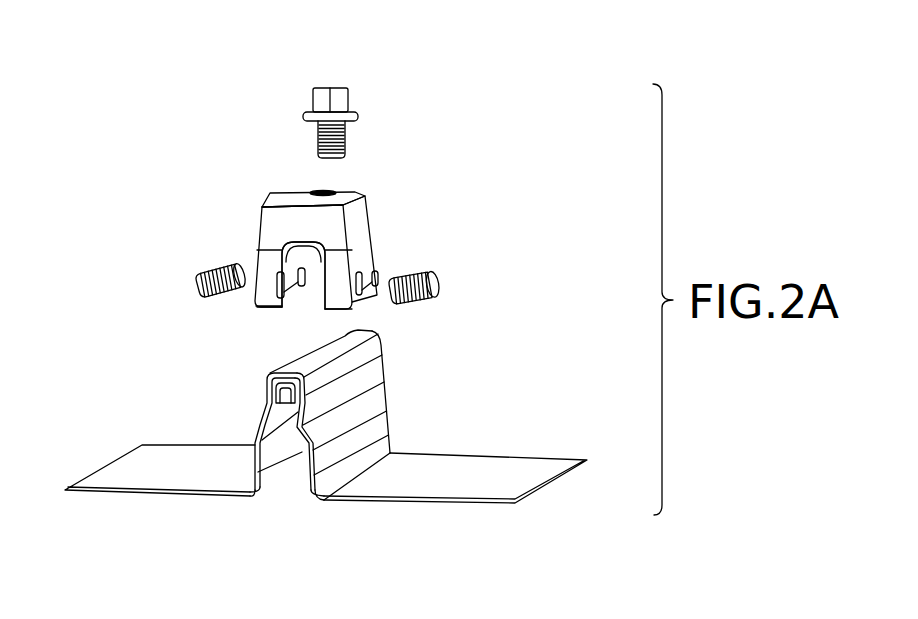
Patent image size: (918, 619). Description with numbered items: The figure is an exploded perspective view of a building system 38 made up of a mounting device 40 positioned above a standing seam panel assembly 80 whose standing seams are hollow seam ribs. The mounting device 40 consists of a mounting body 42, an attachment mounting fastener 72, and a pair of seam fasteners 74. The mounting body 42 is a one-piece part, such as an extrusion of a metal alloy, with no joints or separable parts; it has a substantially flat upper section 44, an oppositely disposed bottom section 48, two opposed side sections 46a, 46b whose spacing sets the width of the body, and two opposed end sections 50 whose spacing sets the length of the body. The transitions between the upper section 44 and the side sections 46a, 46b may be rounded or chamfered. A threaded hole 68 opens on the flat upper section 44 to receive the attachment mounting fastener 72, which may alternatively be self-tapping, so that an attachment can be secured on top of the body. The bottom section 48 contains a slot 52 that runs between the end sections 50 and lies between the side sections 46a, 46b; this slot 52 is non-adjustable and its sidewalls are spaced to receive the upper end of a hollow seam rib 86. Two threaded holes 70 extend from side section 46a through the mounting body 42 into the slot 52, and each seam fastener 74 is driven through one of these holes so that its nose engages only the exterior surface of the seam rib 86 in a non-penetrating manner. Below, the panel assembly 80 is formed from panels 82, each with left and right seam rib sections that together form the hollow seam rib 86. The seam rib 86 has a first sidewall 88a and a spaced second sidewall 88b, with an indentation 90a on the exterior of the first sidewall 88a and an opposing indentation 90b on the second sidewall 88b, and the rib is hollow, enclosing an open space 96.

The building system 38 is at (533, 68).
The mounting device 40 is at (208, 120).
The mounting body 42 is at (372, 193).
The upper section 44 is at (272, 193).
The side section 46a is at (258, 253).
The side section 46b is at (372, 240).
The bottom section 48 is at (256, 306).
The end sections 50 is at (353, 192).
The slot 52 is at (302, 304).
The threaded hole 68 is at (310, 190).
The threaded hole 70 is at (373, 273).
The attachment mounting fastener 72 is at (333, 87).
The seam fastener 74 is at (216, 268).
The standing seam panel assembly 80 is at (561, 383).
The panel 82 is at (148, 481).
The hollow seam rib 86 is at (372, 331).
The first sidewall 88a is at (255, 465).
The second sidewall 88b is at (375, 430).
The indentation 90a is at (258, 412).
The indentation 90b is at (362, 388).
The open space 96 is at (289, 487).